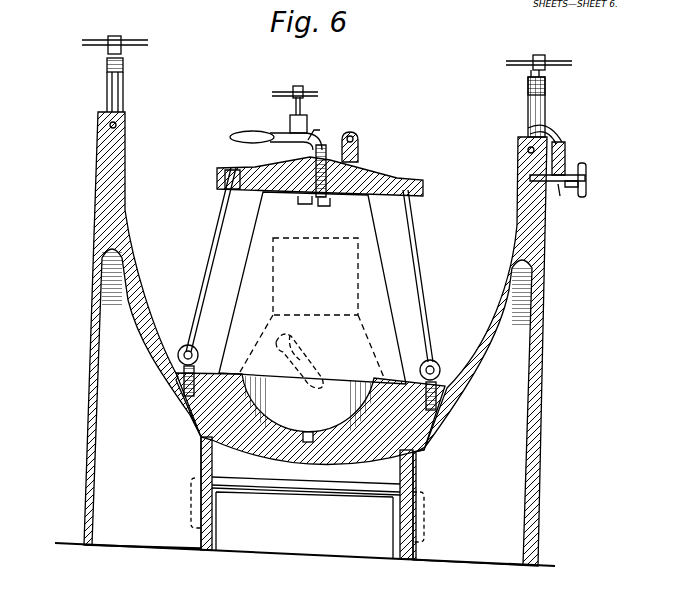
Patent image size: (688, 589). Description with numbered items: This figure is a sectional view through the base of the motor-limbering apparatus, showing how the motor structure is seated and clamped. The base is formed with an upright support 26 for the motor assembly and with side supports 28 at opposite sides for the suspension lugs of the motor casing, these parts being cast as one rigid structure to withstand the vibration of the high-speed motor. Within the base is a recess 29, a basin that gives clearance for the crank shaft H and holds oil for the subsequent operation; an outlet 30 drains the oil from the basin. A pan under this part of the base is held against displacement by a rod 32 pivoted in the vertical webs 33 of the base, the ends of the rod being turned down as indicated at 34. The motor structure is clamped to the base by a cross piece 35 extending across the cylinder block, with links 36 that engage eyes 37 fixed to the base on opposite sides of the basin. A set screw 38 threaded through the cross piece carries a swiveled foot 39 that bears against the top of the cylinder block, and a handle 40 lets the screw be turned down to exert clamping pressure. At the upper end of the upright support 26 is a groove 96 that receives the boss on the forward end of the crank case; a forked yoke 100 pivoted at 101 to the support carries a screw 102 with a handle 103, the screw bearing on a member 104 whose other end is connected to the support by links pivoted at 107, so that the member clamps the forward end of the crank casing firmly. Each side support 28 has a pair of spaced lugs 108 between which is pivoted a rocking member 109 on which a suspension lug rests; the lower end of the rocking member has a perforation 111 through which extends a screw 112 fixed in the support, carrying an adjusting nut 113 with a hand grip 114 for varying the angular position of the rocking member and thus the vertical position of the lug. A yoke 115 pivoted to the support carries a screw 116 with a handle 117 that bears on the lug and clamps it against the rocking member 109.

The upright support 26 is at (256, 273).
The side support 28 is at (118, 206).
The recess 29 is at (310, 420).
The outlet 30 is at (325, 500).
The rod 32 is at (348, 486).
The vertical web 33 is at (201, 527).
The turned down rod end 34 is at (193, 497).
The cross piece 35 is at (375, 170).
The link 36 is at (215, 252).
The eye 37 is at (185, 345).
The set screw 38 is at (325, 148).
The swiveled foot 39 is at (305, 200).
The handle 40 is at (250, 130).
The groove 96 is at (352, 160).
The yoke 100 is at (282, 146).
The pivot 101 is at (261, 196).
The screw 102 is at (290, 120).
The handle 103 is at (293, 92).
The member 104 is at (314, 130).
The pivot 107 is at (332, 198).
The lug 108 is at (565, 140).
The rocking member 109 is at (566, 160).
The perforation 111 is at (560, 196).
The screw 112 is at (530, 178).
The adjusting nut 113 is at (586, 177).
The hand grip 114 is at (586, 190).
The yoke 115 is at (546, 88).
The screw 116 is at (531, 74).
The handle 117 is at (548, 58).
The crank shaft H is at (318, 366).